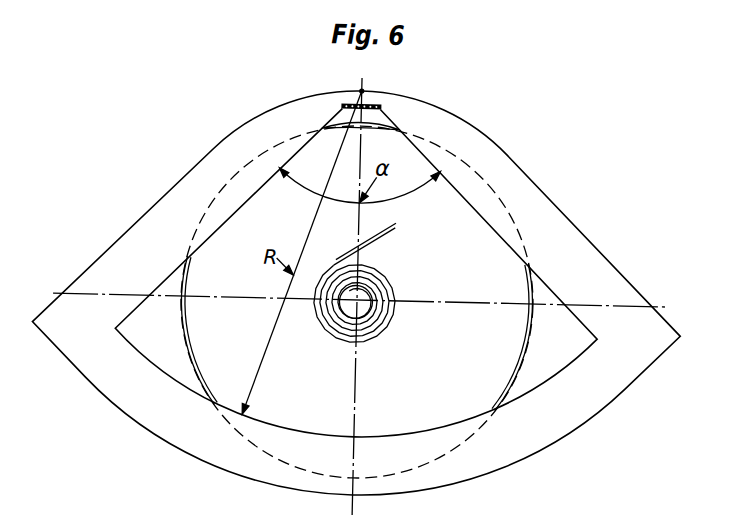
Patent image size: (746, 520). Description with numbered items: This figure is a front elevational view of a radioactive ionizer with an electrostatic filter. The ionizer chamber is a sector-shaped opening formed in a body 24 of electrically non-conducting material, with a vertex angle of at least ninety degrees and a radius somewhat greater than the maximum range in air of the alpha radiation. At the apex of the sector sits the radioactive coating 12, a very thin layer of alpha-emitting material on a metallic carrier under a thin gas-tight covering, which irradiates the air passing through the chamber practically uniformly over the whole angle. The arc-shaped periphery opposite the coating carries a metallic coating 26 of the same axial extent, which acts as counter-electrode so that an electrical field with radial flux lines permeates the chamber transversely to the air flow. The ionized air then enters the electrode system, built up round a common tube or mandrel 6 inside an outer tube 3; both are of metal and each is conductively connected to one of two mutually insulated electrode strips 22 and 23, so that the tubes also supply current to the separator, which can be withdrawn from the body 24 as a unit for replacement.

The tube 3 is at (358, 240).
The common tube or mandrel 6 is at (365, 304).
The radioactive coating 12 is at (350, 85).
The electrode strip 22 is at (359, 236).
The electrode strip 23 is at (384, 246).
The body 24 is at (358, 281).
The metallic coating 26 is at (356, 307).